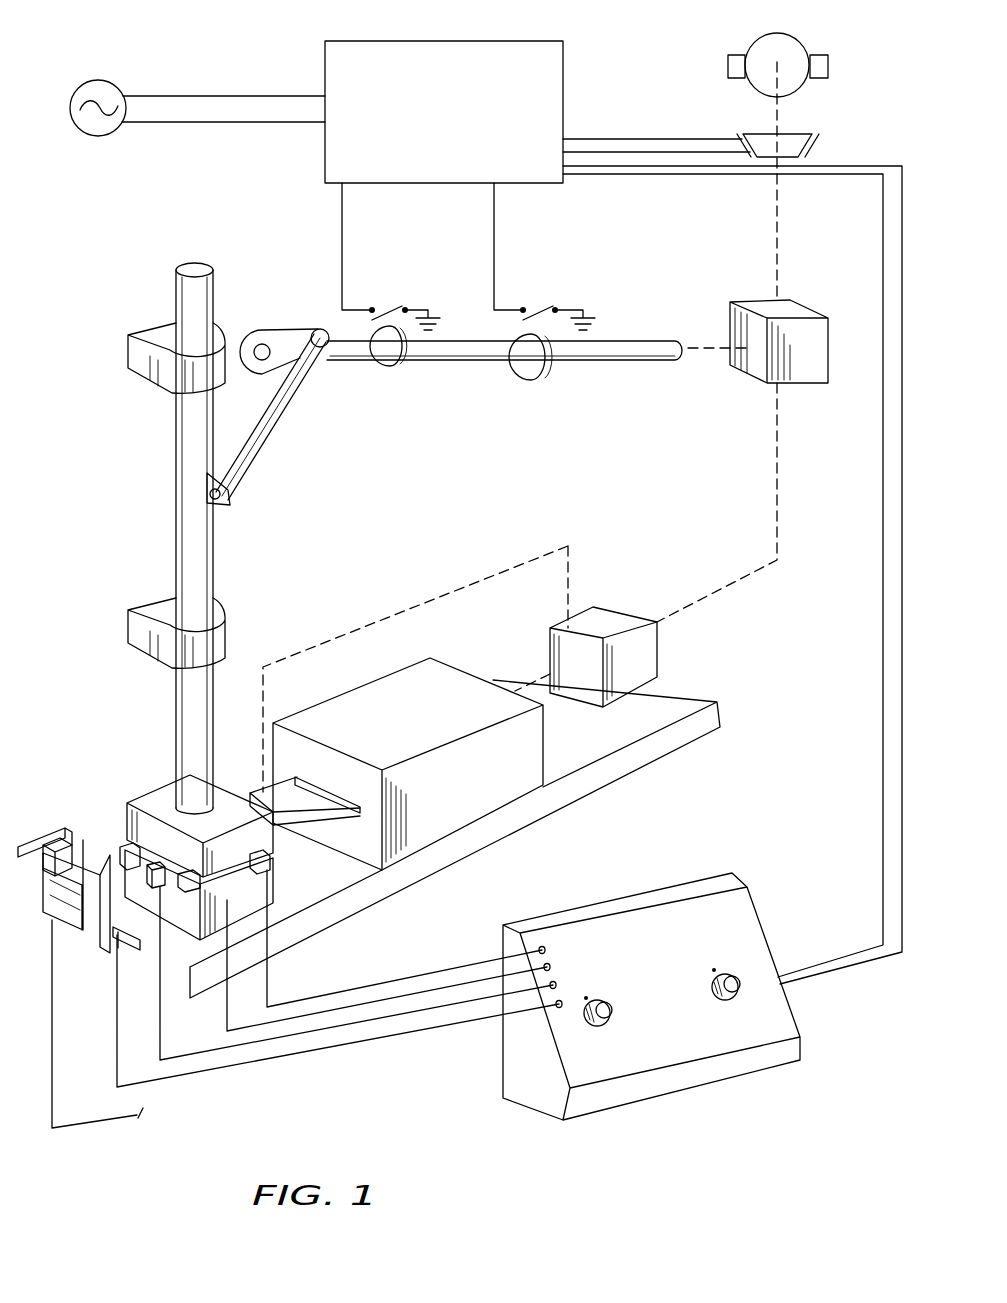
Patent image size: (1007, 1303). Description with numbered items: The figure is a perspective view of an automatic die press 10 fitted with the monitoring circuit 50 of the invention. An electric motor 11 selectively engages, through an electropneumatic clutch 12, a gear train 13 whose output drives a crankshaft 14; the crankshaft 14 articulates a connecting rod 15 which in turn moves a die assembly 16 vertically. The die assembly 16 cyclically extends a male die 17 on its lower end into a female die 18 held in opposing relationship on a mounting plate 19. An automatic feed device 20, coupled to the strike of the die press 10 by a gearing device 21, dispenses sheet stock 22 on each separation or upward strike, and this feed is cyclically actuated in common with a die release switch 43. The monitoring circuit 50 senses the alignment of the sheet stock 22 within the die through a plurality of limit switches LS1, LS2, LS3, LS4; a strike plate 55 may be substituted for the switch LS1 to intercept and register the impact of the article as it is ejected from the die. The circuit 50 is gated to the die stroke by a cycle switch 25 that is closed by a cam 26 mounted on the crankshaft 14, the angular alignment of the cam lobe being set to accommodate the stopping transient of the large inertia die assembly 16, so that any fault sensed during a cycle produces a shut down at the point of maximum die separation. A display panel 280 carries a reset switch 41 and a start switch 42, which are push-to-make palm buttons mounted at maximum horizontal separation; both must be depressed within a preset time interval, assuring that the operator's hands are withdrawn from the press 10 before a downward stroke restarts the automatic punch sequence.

The die press 10 is at (843, 990).
The electric motor 11 is at (795, 48).
The electropneumatic clutch 12 is at (812, 145).
The gear train 13 is at (808, 310).
The crankshaft 14 is at (585, 360).
The connecting rod 15 is at (285, 392).
The die assembly 16 is at (205, 553).
The male die 17 is at (225, 805).
The female die 18 is at (195, 880).
The mounting plate 19 is at (312, 925).
The automatic feed device 20 is at (405, 675).
The gearing device 21 is at (600, 622).
The sheet stock 22 is at (300, 828).
The cycle switch 25 is at (385, 300).
The cam 26 is at (400, 362).
The reset switch 41 is at (598, 1000).
The start switch 42 is at (728, 974).
The die release switch 43 is at (545, 300).
The monitoring circuit 50 is at (563, 62).
The strike plate 55 is at (70, 845).
The display panel 280 is at (748, 893).
The limit switch LS1 is at (150, 880).
The limit switch LS2 is at (228, 872).
The limit switch LS3 is at (240, 858).
The limit switch LS4 is at (125, 848).